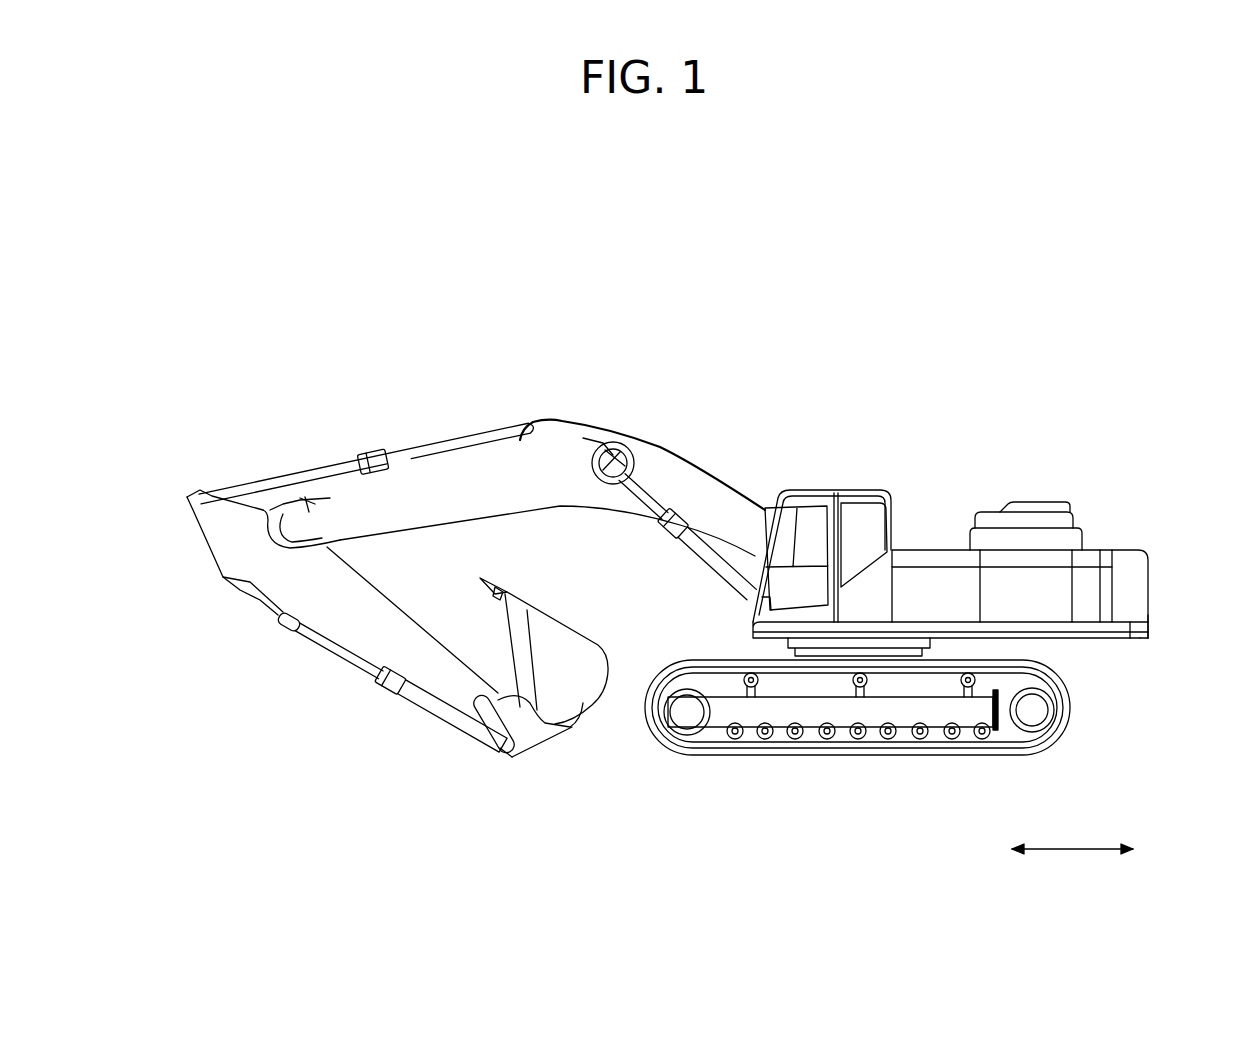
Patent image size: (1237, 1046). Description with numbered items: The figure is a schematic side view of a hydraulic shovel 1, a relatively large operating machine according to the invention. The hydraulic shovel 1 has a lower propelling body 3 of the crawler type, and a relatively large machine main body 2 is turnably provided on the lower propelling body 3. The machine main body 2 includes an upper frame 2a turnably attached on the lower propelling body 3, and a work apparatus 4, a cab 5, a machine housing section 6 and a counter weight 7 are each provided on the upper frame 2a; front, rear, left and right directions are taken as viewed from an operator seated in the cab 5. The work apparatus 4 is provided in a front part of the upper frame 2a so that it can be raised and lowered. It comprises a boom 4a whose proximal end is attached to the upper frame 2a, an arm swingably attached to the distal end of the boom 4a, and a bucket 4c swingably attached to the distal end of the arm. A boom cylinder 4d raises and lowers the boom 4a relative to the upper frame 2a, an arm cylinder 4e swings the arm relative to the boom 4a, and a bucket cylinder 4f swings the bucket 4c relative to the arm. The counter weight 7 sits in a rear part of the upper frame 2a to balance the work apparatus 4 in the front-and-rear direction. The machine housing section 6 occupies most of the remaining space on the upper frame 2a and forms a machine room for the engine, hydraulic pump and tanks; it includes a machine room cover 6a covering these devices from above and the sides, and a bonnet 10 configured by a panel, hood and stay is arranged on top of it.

The hydraulic shovel 1 is at (823, 312).
The machine main body 2 is at (928, 460).
The upper frame 2a is at (947, 640).
The lower propelling body 3 is at (908, 755).
The work apparatus 4 is at (643, 420).
The boom 4a is at (432, 482).
The bucket 4c is at (553, 623).
The boom cylinder 4d is at (455, 712).
The arm cylinder 4e is at (296, 480).
The bucket cylinder 4f is at (260, 587).
The cab 5 is at (837, 493).
The machine housing section 6 is at (1098, 535).
The machine room cover 6a is at (940, 578).
The counter weight 7 is at (1140, 635).
The bonnet 10 is at (1043, 505).